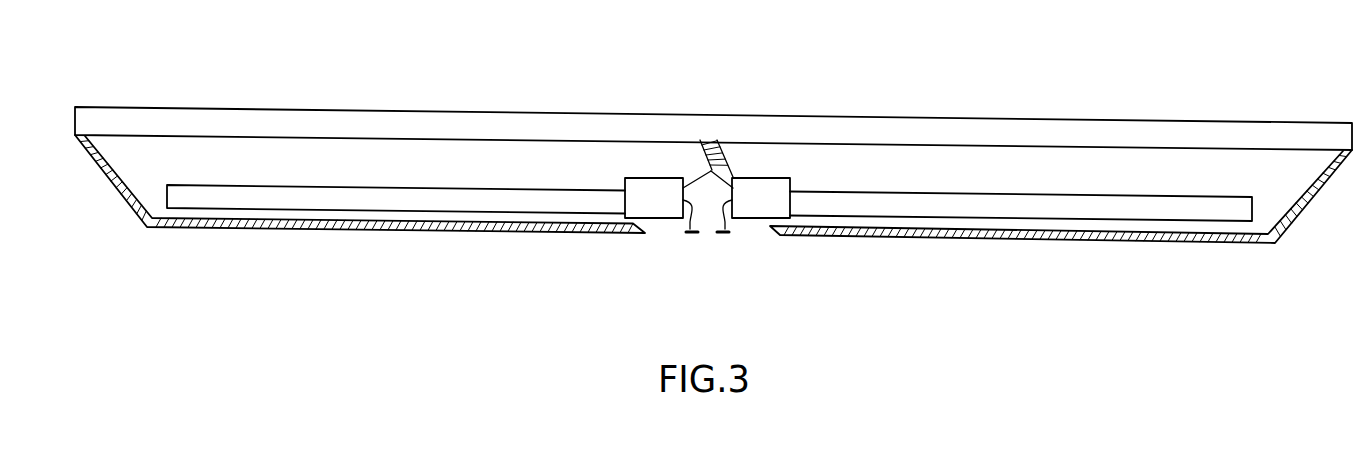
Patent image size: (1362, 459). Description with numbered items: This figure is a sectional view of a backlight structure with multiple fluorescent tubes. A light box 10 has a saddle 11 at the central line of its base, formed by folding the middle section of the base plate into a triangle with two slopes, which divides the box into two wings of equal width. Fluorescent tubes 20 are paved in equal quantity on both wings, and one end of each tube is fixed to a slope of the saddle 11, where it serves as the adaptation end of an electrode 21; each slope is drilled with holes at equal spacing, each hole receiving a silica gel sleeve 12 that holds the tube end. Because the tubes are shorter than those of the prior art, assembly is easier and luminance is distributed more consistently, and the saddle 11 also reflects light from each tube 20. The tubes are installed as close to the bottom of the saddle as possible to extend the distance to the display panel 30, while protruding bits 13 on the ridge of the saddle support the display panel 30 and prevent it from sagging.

The light box 10 is at (1253, 237).
The saddle 11 is at (732, 176).
The silica gel sleeve 12 is at (687, 178).
The protruding bit 13 is at (703, 150).
The fluorescent tube 20 is at (388, 203).
The electrode 21 is at (686, 233).
The display panel 30 is at (1098, 138).